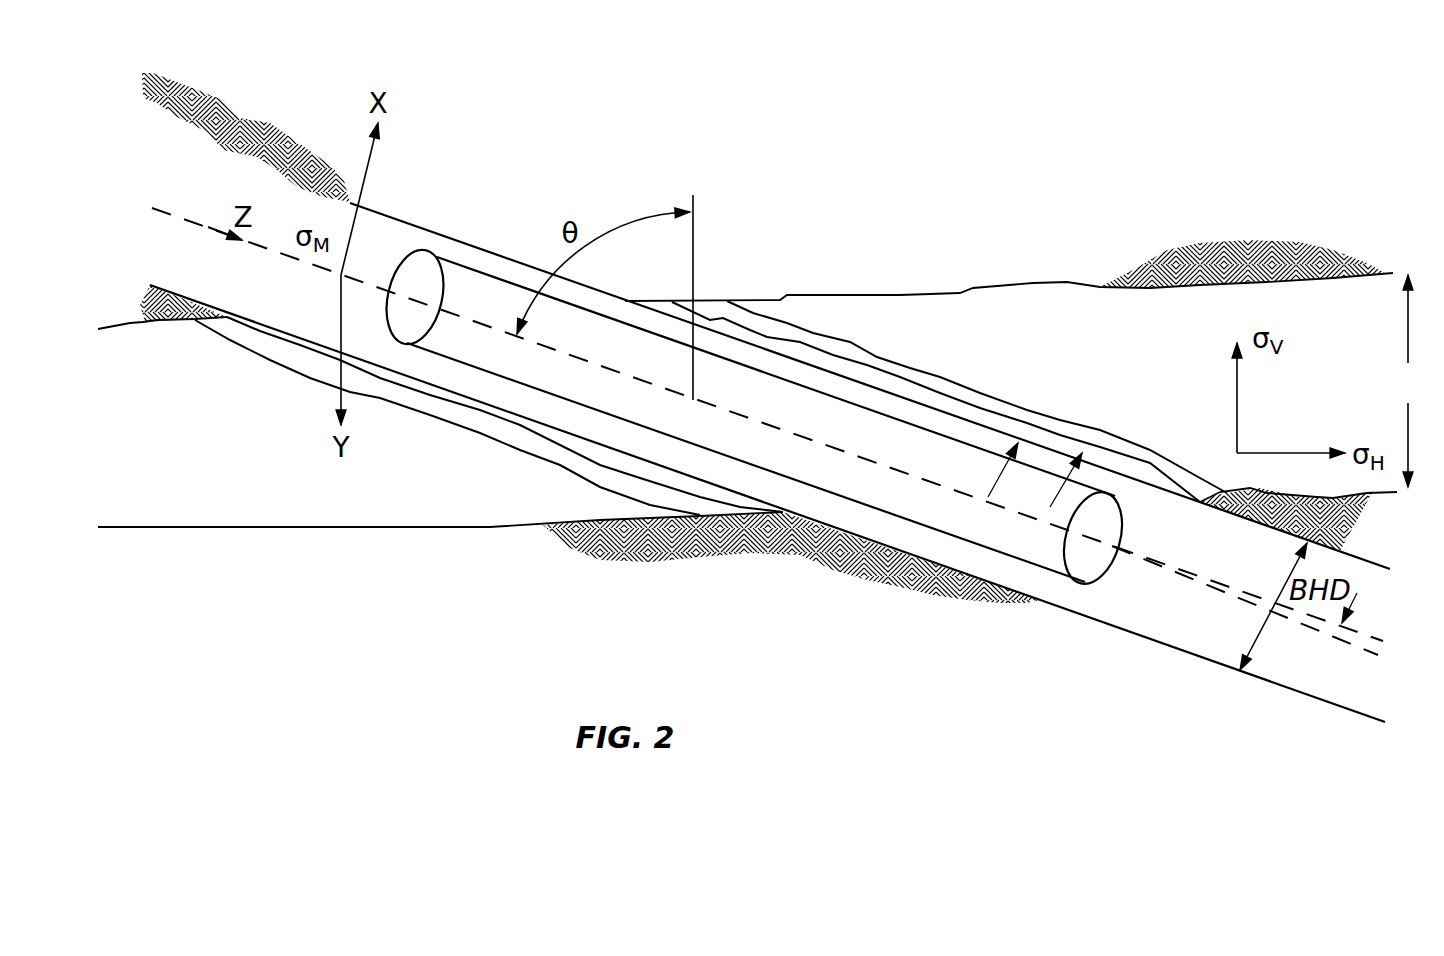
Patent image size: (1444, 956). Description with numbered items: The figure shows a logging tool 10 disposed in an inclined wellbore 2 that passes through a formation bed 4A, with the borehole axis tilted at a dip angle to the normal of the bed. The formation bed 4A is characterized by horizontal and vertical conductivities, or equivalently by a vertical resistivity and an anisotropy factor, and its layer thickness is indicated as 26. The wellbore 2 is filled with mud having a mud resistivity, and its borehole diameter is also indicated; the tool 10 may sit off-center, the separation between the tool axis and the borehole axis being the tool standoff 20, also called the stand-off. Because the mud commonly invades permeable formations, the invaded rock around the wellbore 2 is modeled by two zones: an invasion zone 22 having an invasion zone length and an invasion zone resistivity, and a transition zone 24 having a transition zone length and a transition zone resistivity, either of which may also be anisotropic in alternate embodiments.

The inclined wellbore 2 is at (1153, 620).
The formation bed 4A is at (440, 546).
The tool 10 is at (640, 428).
The tool standoff 20 is at (1327, 642).
The invasion zone 22 is at (1027, 427).
The transition zone 24 is at (1097, 425).
The layer thickness 26 is at (1410, 381).